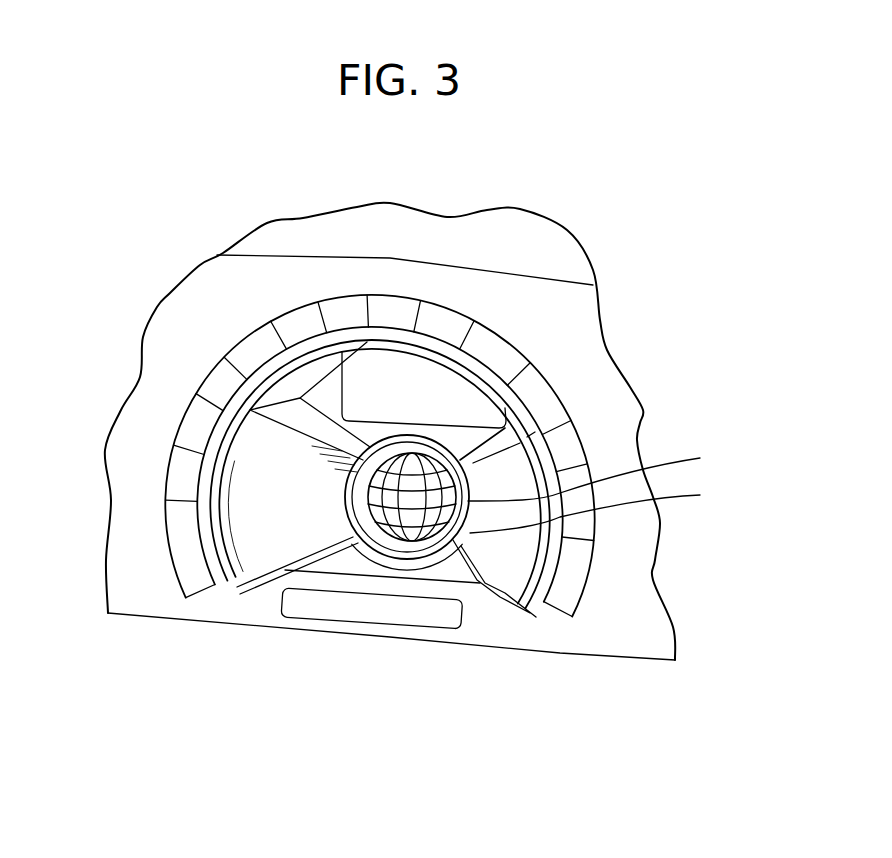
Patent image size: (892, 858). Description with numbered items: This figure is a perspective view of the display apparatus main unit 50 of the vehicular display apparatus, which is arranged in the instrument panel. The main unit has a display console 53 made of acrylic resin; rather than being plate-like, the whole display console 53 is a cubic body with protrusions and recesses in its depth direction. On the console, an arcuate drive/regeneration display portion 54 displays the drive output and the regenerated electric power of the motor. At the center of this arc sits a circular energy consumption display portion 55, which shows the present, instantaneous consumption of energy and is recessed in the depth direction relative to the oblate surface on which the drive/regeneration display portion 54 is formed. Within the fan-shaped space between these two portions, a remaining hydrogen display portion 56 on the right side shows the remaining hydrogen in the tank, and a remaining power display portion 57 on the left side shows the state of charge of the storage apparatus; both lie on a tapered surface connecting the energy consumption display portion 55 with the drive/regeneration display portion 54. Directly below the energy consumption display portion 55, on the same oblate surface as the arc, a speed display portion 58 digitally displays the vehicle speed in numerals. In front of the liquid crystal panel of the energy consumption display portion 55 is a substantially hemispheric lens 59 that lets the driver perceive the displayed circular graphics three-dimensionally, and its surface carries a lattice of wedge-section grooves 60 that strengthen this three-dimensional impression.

The display apparatus main unit 50 is at (548, 268).
The display console 53 is at (598, 421).
The drive/regeneration display portion 54 is at (337, 303).
The energy consumption display portion 55 is at (383, 540).
The remaining hydrogen display portion 56 is at (521, 580).
The remaining power display portion 57 is at (258, 553).
The speed display portion 58 is at (357, 622).
The lens 59 is at (417, 533).
The grooves 60 is at (601, 491).